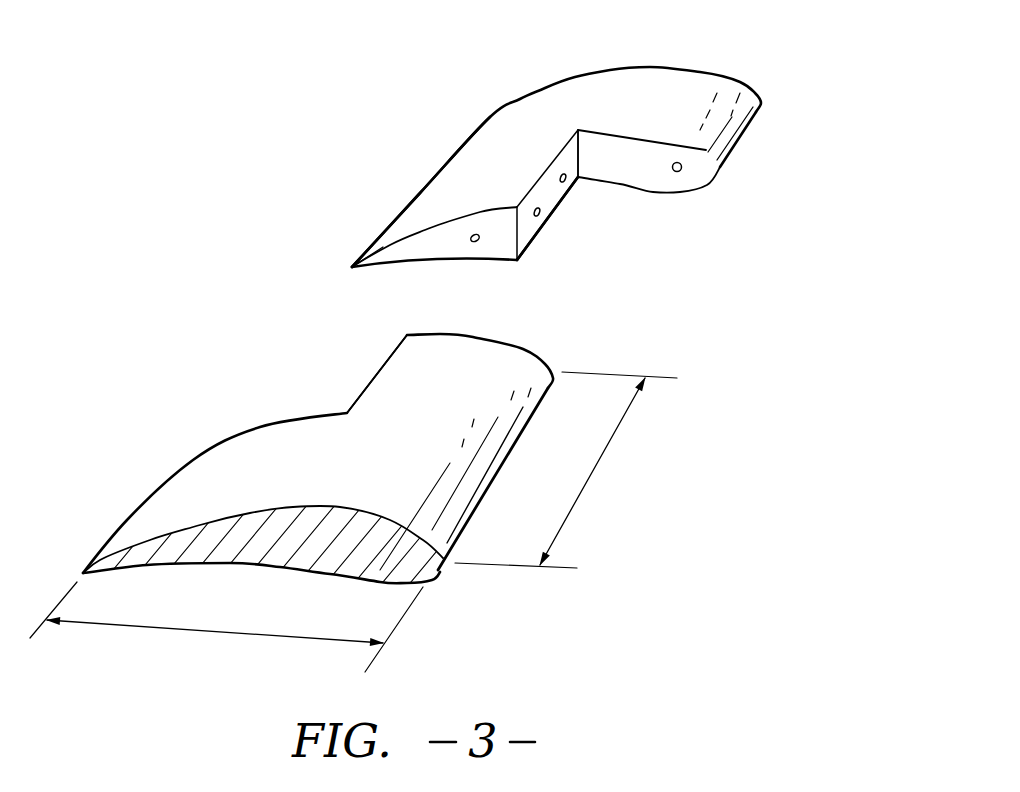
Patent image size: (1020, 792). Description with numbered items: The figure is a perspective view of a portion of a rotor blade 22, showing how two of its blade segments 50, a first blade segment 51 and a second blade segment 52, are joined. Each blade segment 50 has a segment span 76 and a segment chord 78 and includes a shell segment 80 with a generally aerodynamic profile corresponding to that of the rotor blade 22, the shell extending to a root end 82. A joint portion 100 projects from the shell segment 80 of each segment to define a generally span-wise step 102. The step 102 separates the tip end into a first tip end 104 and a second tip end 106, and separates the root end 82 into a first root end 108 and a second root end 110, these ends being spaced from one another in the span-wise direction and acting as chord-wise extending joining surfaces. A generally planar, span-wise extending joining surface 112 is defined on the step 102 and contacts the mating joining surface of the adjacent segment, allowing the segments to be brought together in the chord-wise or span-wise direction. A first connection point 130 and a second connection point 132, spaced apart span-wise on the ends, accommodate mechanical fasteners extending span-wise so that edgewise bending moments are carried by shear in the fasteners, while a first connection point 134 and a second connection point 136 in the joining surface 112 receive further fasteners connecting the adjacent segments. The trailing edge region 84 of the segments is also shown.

The rotor blade 22 is at (252, 165).
The blade segment 50 is at (463, 120).
The first blade segment 51 is at (540, 107).
The second blade segment 52 is at (197, 473).
The segment span 76 is at (600, 460).
The segment chord 78 is at (178, 630).
The shell segment 80 is at (708, 72).
The root end 82 is at (427, 247).
The trailing edge 84 is at (678, 93).
The joint portion 100 is at (447, 197).
The span-wise step 102 is at (575, 157).
The first tip end 104 is at (483, 333).
The second tip end 106 is at (317, 413).
The first root end 108 is at (410, 250).
The second root end 110 is at (673, 172).
The joining surface 112 is at (570, 180).
The first connection point 130 is at (468, 243).
The second connection point 132 is at (663, 193).
The first connection point 134 is at (540, 215).
The second connection point 136 is at (550, 192).